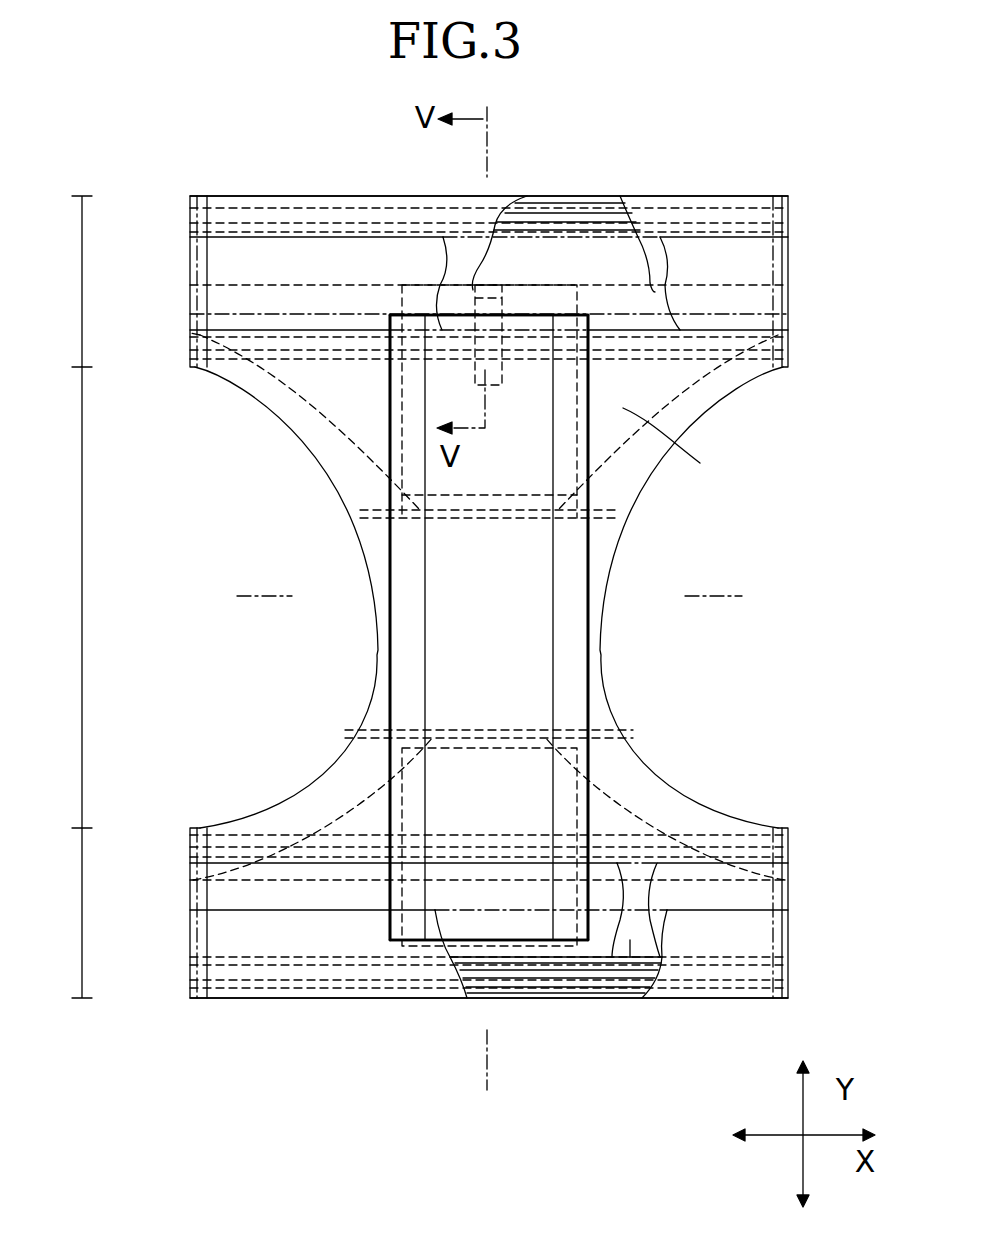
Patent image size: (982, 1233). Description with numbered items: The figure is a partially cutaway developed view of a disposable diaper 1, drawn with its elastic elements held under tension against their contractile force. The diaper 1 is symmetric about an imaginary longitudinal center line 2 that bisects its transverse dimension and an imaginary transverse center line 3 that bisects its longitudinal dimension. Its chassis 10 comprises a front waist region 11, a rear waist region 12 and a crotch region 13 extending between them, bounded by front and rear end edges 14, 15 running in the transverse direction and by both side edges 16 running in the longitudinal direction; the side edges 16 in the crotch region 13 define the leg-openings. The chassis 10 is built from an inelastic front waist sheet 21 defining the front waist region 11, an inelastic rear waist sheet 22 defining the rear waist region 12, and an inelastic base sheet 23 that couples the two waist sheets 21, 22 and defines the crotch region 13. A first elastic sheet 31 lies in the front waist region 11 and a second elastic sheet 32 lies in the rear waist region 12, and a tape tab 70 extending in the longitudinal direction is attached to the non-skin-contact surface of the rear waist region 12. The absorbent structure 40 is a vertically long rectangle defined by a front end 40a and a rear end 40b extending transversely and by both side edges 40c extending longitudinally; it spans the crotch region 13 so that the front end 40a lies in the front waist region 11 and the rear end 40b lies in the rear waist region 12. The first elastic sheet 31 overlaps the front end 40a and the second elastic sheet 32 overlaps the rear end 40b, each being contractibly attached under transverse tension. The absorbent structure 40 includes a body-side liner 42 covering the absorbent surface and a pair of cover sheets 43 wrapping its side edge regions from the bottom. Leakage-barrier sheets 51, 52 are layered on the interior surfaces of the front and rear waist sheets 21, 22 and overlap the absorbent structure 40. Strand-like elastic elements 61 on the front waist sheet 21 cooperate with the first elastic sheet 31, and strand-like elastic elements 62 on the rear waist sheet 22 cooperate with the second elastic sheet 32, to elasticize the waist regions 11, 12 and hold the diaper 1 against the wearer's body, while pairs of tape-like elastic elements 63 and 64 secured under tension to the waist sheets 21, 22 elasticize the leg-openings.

The disposable diaper 1 is at (758, 150).
The chassis 10 is at (200, 170).
The front waist region 11 is at (80, 900).
The rear waist region 12 is at (80, 277).
The crotch region 13 is at (80, 575).
The front end edge 14 is at (357, 998).
The rear end edge 15 is at (345, 196).
The side edges 16 is at (367, 711).
The front waist sheet 21 is at (630, 940).
The rear waist sheet 22 is at (628, 267).
The base sheet 23 is at (681, 446).
The first elastic sheet 31 is at (693, 890).
The second elastic sheet 32 is at (757, 265).
The absorbent structure 40 is at (390, 680).
The front end 40a is at (522, 940).
The rear end 40b is at (533, 317).
The side edges of absorbent structure 40c is at (392, 538).
The body-side liner 42 is at (447, 606).
The cover sheets 43 is at (407, 643).
The leakage-barrier sheet 51 is at (490, 770).
The leakage-barrier sheet 52 is at (490, 480).
The elastic elements 61 is at (490, 980).
The elastic elements 62 is at (603, 200).
The tape-like elastic elements 63 is at (330, 797).
The tape-like elastic elements 64 is at (310, 428).
The tape tab 70 is at (492, 373).
The imaginary longitudinal center line 2 is at (490, 113).
The imaginary transverse center line 3 is at (240, 594).